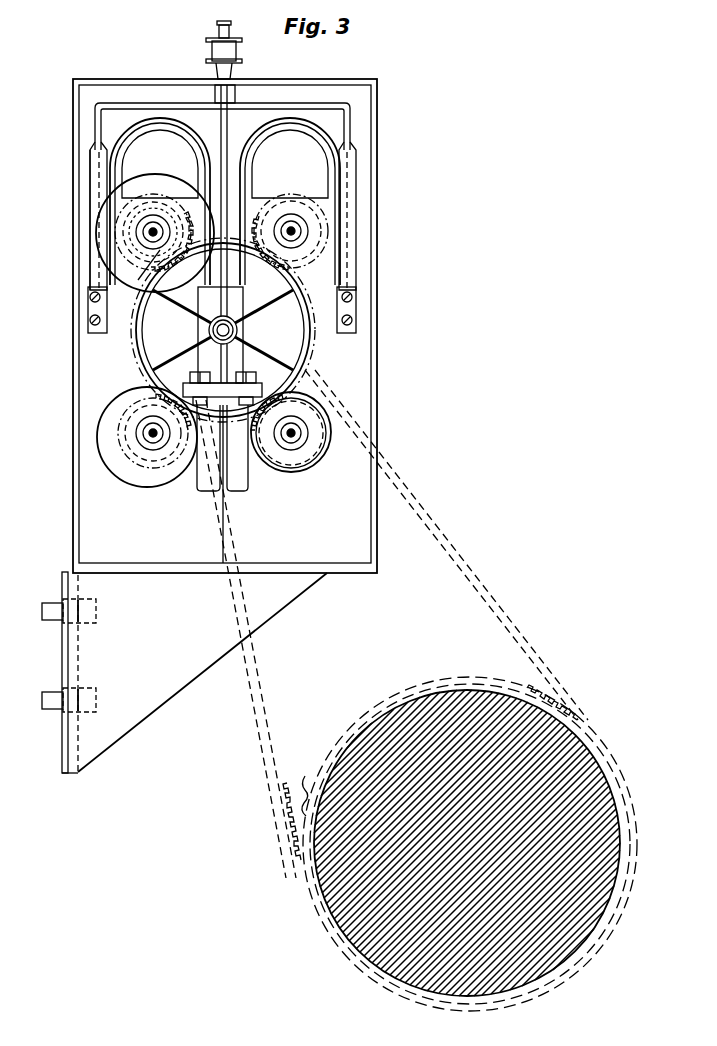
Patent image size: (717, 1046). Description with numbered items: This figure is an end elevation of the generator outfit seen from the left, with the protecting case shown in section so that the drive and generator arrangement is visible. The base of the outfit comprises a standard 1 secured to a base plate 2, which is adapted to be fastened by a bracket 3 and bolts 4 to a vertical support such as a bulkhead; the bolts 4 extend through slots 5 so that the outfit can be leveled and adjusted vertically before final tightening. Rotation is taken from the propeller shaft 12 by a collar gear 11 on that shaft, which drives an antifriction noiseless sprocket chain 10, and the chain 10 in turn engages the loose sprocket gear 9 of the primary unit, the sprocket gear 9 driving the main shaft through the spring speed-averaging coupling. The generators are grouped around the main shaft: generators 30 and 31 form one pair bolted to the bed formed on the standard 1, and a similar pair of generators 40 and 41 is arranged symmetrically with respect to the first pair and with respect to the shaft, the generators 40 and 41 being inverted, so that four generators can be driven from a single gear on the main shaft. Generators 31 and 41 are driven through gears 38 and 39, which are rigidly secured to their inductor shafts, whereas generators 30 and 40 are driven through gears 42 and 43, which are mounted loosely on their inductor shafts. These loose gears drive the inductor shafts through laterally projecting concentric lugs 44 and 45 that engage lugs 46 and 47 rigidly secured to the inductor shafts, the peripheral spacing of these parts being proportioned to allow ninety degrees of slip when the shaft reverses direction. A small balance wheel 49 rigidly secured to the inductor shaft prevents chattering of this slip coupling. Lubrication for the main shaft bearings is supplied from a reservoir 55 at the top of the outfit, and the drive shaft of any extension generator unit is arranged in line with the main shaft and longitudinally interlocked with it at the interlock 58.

The standard 1 is at (226, 504).
The base plate 2 is at (337, 574).
The bracket 3 is at (62, 665).
The bolts 4 is at (50, 603).
The slots 5 is at (78, 645).
The sprocket gear 9 is at (240, 333).
The sprocket chain 10 is at (285, 805).
The collar gear 11 is at (304, 780).
The propeller shaft 12 is at (590, 822).
The generator 30 is at (100, 142).
The generator 31 is at (345, 148).
The gear 38 is at (300, 262).
The gear 39 is at (293, 395).
The generator 40 is at (118, 437).
The generator 41 is at (313, 440).
The gear 42 is at (107, 272).
The gear 43 is at (170, 395).
The lug 44 is at (177, 204).
The lug 45 is at (157, 262).
The lug 46 is at (183, 192).
The lug 47 is at (131, 233).
The balance wheel 49 is at (138, 280).
The reservoir 55 is at (234, 52).
The interlock 58 is at (209, 330).